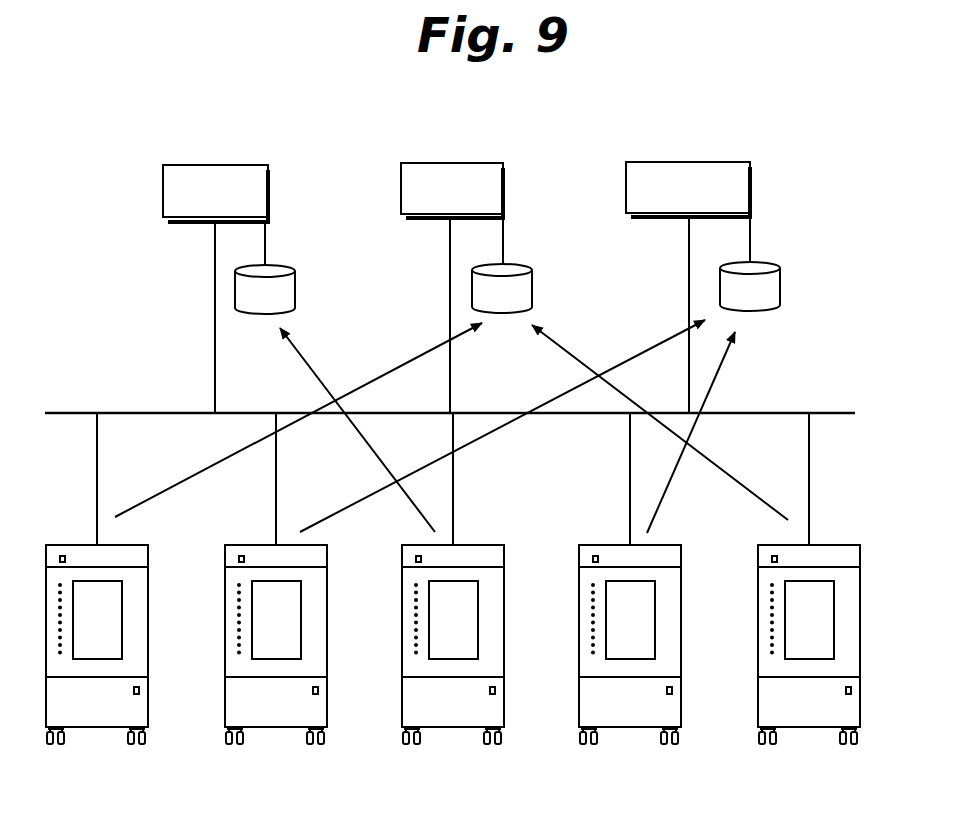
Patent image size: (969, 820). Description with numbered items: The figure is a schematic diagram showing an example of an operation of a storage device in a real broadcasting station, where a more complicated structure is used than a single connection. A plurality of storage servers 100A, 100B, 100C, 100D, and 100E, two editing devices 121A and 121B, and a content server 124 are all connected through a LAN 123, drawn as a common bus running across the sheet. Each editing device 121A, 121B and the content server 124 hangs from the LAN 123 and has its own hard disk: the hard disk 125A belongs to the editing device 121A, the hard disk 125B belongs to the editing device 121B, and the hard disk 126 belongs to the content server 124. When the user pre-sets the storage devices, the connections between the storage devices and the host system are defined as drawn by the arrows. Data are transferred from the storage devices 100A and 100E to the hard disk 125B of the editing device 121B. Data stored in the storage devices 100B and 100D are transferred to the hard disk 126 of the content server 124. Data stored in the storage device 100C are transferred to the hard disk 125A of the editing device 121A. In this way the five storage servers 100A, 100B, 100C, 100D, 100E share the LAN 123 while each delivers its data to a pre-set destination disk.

The editing device 121A is at (218, 163).
The editing device 121B is at (456, 162).
The content server 124 is at (691, 160).
The hard disk 125A is at (297, 294).
The hard disk 125B is at (534, 293).
The hard disk 126 is at (782, 293).
The LAN 123 is at (73, 411).
The storage server 100A is at (178, 611).
The storage server 100B is at (357, 611).
The storage server 100C is at (534, 611).
The storage server 100D is at (711, 611).
The storage server 100E is at (890, 611).